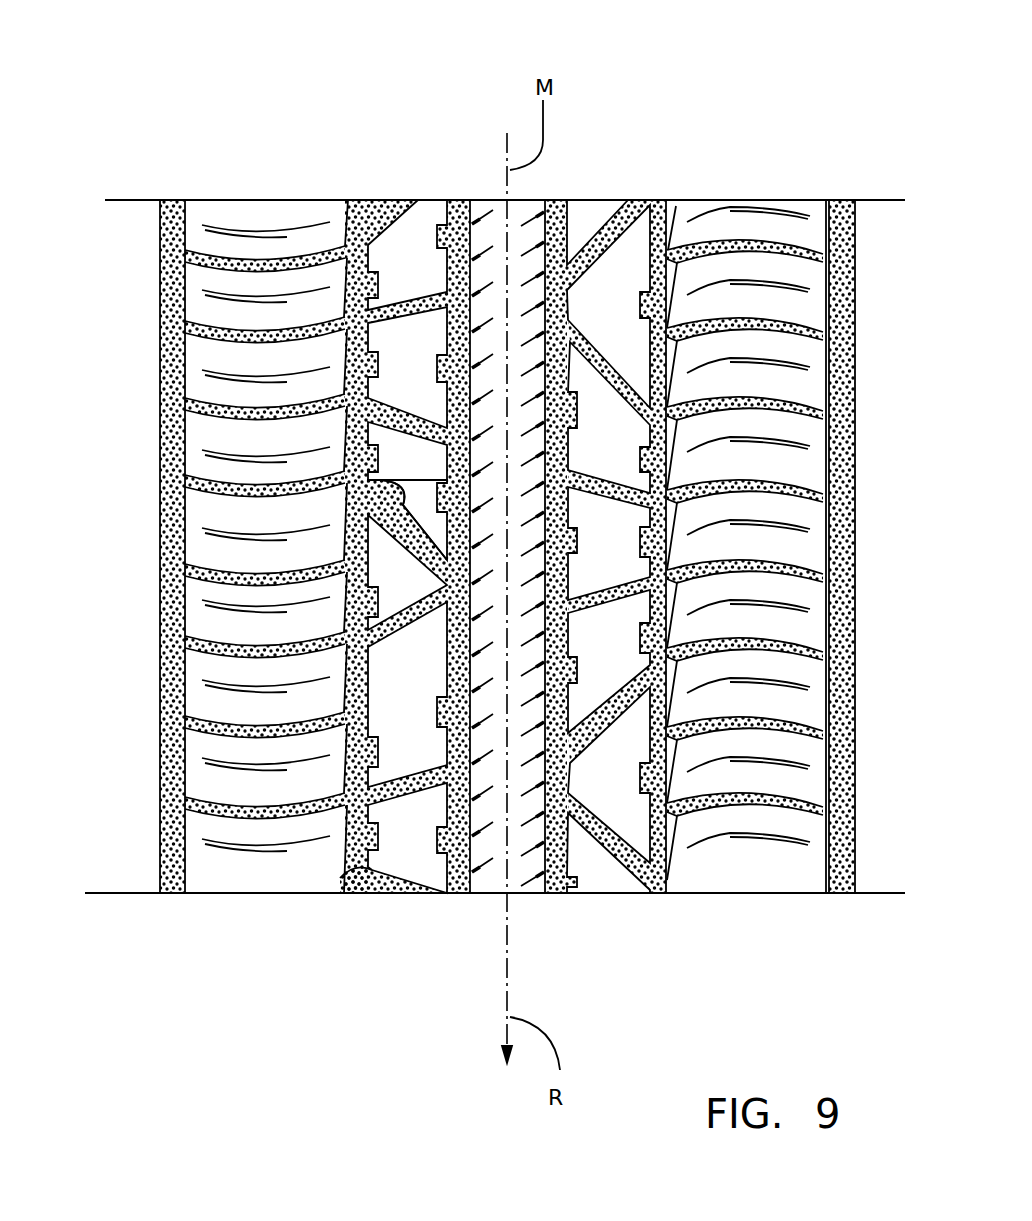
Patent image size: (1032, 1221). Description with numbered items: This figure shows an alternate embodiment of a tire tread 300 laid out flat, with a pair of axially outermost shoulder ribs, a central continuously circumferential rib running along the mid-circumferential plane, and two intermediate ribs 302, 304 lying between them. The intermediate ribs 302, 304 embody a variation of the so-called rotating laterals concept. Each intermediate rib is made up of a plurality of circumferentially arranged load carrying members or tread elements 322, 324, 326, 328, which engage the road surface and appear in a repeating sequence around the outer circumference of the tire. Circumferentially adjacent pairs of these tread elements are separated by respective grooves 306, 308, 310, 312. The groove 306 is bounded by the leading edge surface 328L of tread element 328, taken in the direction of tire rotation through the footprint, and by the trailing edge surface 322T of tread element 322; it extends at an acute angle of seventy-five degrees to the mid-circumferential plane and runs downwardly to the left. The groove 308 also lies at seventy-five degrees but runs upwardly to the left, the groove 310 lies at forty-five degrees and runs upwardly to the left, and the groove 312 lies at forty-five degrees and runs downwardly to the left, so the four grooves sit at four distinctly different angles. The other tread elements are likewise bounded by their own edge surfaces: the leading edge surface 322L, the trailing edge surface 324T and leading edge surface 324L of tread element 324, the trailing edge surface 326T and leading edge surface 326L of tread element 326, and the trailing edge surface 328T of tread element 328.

The tread 300 is at (732, 92).
The intermediate rib 302 is at (412, 905).
The intermediate rib 304 is at (607, 905).
The groove 306 is at (693, 500).
The groove 308 is at (687, 574).
The groove 310 is at (687, 658).
The groove 312 is at (690, 880).
The tread element 322 is at (627, 548).
The tread element 324 is at (627, 646).
The tread element 326 is at (375, 205).
The tread element 328 is at (590, 862).
The trailing edge surface 322T is at (440, 308).
The leading edge surface 322L is at (440, 426).
The trailing edge surface 324T is at (440, 443).
The leading edge surface 324L is at (440, 481).
The trailing edge surface 326T is at (400, 545).
The leading edge surface 326L is at (440, 600).
The trailing edge surface 328T is at (440, 690).
The leading edge surface 328L is at (467, 313).